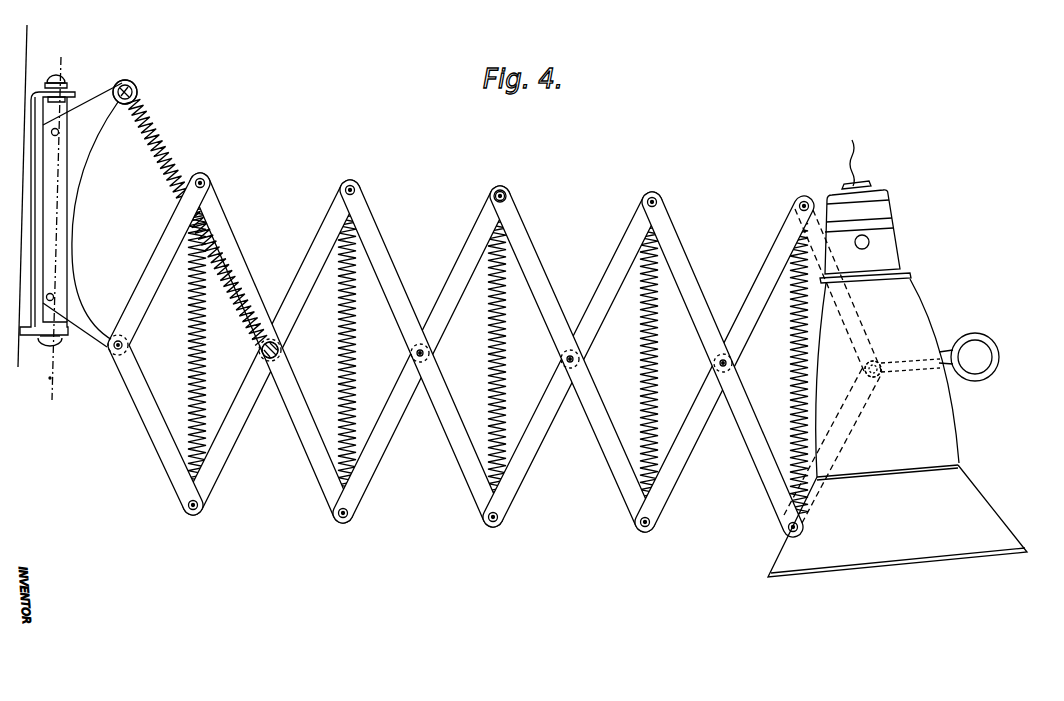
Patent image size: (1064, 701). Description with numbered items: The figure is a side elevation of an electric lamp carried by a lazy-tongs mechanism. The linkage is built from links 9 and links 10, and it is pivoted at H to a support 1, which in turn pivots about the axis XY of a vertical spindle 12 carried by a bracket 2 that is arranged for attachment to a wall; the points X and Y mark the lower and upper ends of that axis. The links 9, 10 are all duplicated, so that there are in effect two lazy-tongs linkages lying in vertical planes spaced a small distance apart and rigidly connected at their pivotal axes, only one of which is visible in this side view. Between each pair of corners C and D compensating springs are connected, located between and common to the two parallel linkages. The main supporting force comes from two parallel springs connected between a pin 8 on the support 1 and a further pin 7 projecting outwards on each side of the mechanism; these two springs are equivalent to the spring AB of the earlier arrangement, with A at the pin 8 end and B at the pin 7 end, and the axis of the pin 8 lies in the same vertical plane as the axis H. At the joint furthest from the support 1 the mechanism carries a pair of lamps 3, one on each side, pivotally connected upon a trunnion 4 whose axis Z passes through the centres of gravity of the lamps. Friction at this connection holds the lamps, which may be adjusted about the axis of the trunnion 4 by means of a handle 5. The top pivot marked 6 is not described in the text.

The support 1 is at (85, 130).
The bracket 2 is at (27, 163).
The lamp 3 is at (950, 430).
The trunnion 4 is at (885, 362).
The handle 5 is at (975, 334).
The top pivot 6 is at (505, 195).
The pin 7 is at (277, 348).
The pin 8 is at (133, 82).
The link 9 is at (240, 258).
The link 10 is at (152, 432).
The vertical spindle 12 is at (65, 80).
The spring end point A is at (137, 95).
The spring end point B is at (277, 353).
The corner C is at (346, 188).
The corner D is at (190, 510).
The pivot axis H is at (113, 352).
The axis end point X is at (46, 380).
The axis end point Y is at (58, 216).
The trunnion axis Z is at (880, 378).